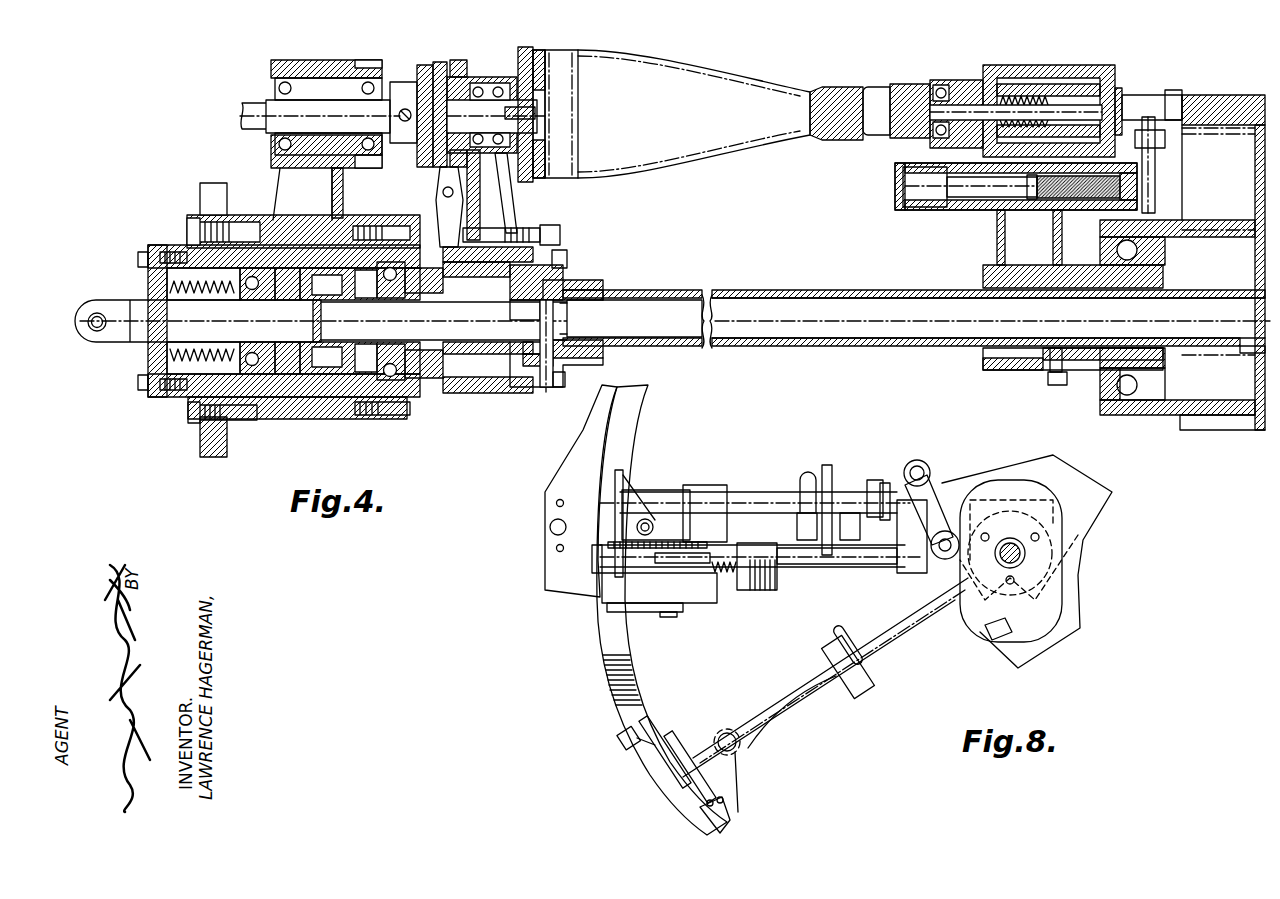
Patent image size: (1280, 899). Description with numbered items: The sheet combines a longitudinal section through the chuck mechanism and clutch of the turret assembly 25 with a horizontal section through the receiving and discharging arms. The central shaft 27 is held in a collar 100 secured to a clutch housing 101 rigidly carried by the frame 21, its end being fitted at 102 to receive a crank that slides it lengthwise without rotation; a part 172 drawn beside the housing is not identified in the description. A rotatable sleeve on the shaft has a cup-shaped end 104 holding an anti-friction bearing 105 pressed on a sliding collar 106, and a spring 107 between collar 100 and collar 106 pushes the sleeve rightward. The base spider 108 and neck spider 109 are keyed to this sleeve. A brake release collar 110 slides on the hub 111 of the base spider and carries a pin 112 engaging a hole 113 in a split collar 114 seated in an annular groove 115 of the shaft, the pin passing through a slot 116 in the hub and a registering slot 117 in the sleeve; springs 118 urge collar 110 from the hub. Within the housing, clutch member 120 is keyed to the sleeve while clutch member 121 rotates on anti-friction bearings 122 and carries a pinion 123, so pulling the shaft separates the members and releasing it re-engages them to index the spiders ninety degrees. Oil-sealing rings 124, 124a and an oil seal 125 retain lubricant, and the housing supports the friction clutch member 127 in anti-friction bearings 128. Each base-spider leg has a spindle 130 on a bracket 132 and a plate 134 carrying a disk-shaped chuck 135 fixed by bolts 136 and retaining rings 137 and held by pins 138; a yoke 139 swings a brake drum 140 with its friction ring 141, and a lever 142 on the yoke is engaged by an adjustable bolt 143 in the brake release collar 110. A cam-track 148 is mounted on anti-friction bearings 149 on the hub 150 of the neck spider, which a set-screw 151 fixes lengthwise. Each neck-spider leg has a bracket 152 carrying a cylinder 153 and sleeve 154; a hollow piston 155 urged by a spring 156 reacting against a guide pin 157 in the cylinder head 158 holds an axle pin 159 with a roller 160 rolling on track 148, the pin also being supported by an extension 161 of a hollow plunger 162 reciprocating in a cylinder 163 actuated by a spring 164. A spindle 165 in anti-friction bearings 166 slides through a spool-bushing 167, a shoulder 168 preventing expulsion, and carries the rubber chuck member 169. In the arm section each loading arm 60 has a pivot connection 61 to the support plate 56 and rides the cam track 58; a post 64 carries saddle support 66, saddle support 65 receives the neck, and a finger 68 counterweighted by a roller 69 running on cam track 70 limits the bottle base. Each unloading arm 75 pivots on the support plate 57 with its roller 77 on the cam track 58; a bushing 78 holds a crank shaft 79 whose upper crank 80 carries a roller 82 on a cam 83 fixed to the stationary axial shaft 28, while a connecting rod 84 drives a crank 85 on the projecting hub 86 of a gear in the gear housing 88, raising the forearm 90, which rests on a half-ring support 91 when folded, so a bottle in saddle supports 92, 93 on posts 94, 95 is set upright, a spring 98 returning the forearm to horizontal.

In FIG. 4, the frame 21 is at (200, 440).
In FIG. 4, the turret assembly 25 is at (988, 40).
In FIG. 4, the central shaft 27 is at (830, 290).
In FIG. 8, the stationary axial shaft 28 is at (1025, 553).
In FIG. 8, the support plate 56 is at (1062, 510).
In FIG. 8, the support plate 57 is at (1082, 470).
In FIG. 8, the cam track 58 is at (600, 640).
In FIG. 8, the loading arm 60 is at (880, 590).
In FIG. 8, the pivot connection 61 is at (990, 632).
In FIG. 8, the post 64 is at (738, 740).
In FIG. 8, the saddle support 65 is at (842, 625).
In FIG. 8, the saddle support 66 is at (663, 713).
In FIG. 8, the finger 68 is at (672, 780).
In FIG. 8, the roller 69 is at (620, 740).
In FIG. 8, the cam track 70 is at (583, 438).
In FIG. 8, the unloading arm 75 is at (815, 567).
In FIG. 8, the roller 77 is at (592, 565).
In FIG. 8, the bushing 78 is at (920, 460).
In FIG. 8, the crank shaft 79 is at (930, 475).
In FIG. 8, the upper crank 80 is at (935, 495).
In FIG. 8, the roller 82 is at (958, 540).
In FIG. 8, the cam 83 is at (1005, 640).
In FIG. 8, the connecting rod 84 is at (855, 567).
In FIG. 8, the crank 85 is at (690, 560).
In FIG. 8, the projecting hub 86 is at (668, 617).
In FIG. 8, the gear housing 88 is at (700, 603).
In FIG. 8, the forearm 90 is at (775, 492).
In FIG. 8, the half-ring support 91 is at (878, 480).
In FIG. 8, the saddle support 92 is at (623, 474).
In FIG. 8, the saddle support 93 is at (832, 478).
In FIG. 8, the post 94 is at (655, 527).
In FIG. 8, the post 95 is at (808, 480).
In FIG. 8, the spring 98 is at (740, 590).
In FIG. 4, the collar 100 is at (148, 362).
In FIG. 4, the clutch housing 101 is at (343, 400).
In FIG. 4, the fitted end 102 is at (97, 311).
In FIG. 4, the cup-shaped end 104 is at (262, 375).
In FIG. 4, the anti-friction bearing 105 is at (930, 280).
In FIG. 4, the collar 106 is at (238, 340).
In FIG. 4, the spring 107 is at (218, 358).
In FIG. 4, the base spider 108 is at (520, 207).
In FIG. 4, the neck spider 109 is at (995, 228).
In FIG. 4, the brake release collar 110 is at (565, 380).
In FIG. 4, the hub 111 is at (512, 387).
In FIG. 4, the pin 112 is at (546, 387).
In FIG. 4, the hole 113 is at (530, 322).
In FIG. 4, the split collar 114 is at (580, 282).
In FIG. 4, the annular groove 115 is at (567, 318).
In FIG. 4, the slot 116 is at (523, 362).
In FIG. 4, the registering slot 117 is at (523, 347).
In FIG. 4, the springs 118 is at (566, 258).
In FIG. 4, the clutch member 120 is at (290, 375).
In FIG. 4, the clutch member 121 is at (322, 380).
In FIG. 4, the anti-friction bearings 122 is at (425, 385).
In FIG. 4, the pinion 123 is at (372, 262).
In FIG. 4, the oil-sealing ring 124 is at (150, 300).
In FIG. 4, the oil-sealing ring 124a is at (458, 300).
In FIG. 4, the oil seal 125 is at (321, 318).
In FIG. 4, the clutch member 127 is at (403, 82).
In FIG. 4, the anti-friction bearings 128 is at (368, 85).
In FIG. 4, the spindle 130 is at (505, 77).
In FIG. 4, the bracket 132 is at (478, 192).
In FIG. 4, the plate 134 is at (533, 150).
In FIG. 4, the chuck 135 is at (425, 65).
In FIG. 4, the bolts 136 is at (540, 110).
In FIG. 4, the retaining rings 137 is at (545, 90).
In FIG. 4, the pins 138 is at (540, 70).
In FIG. 4, the yoke 139 is at (445, 172).
In FIG. 4, the brake drum 140 is at (460, 60).
In FIG. 4, the friction ring 141 is at (445, 62).
In FIG. 4, the lever 142 is at (440, 212).
In FIG. 4, the adjustable bolt 143 is at (480, 190).
In FIG. 4, the cam-track 148 is at (1218, 95).
In FIG. 4, the anti-friction bearings 149 is at (1140, 385).
In FIG. 4, the hub 150 is at (983, 365).
In FIG. 4, the set-screw 151 is at (483, 83).
In FIG. 4, the bracket 152 is at (1070, 235).
In FIG. 4, the cylinder 153 is at (920, 210).
In FIG. 4, the sleeve 154 is at (1080, 65).
In FIG. 4, the hollow piston 155 is at (1050, 200).
In FIG. 4, the spring 156 is at (1058, 205).
In FIG. 4, the guide pin 157 is at (960, 177).
In FIG. 4, the cylinder head 158 is at (905, 180).
In FIG. 4, the axle pin 159 is at (1155, 170).
In FIG. 4, the roller 160 is at (1175, 95).
In FIG. 4, the extension 161 is at (1160, 148).
In FIG. 4, the hollow plunger 162 is at (1120, 95).
In FIG. 4, the cylinder 163 is at (968, 78).
In FIG. 4, the spring 164 is at (1012, 96).
In FIG. 4, the spindle 165 is at (960, 70).
In FIG. 4, the anti-friction bearings 166 is at (922, 88).
In FIG. 4, the spool-bushing 167 is at (1048, 84).
In FIG. 4, the shoulder 168 is at (1102, 112).
In FIG. 4, the chuck member 169 is at (878, 85).
In FIG. 4, the base plate 172 is at (290, 245).